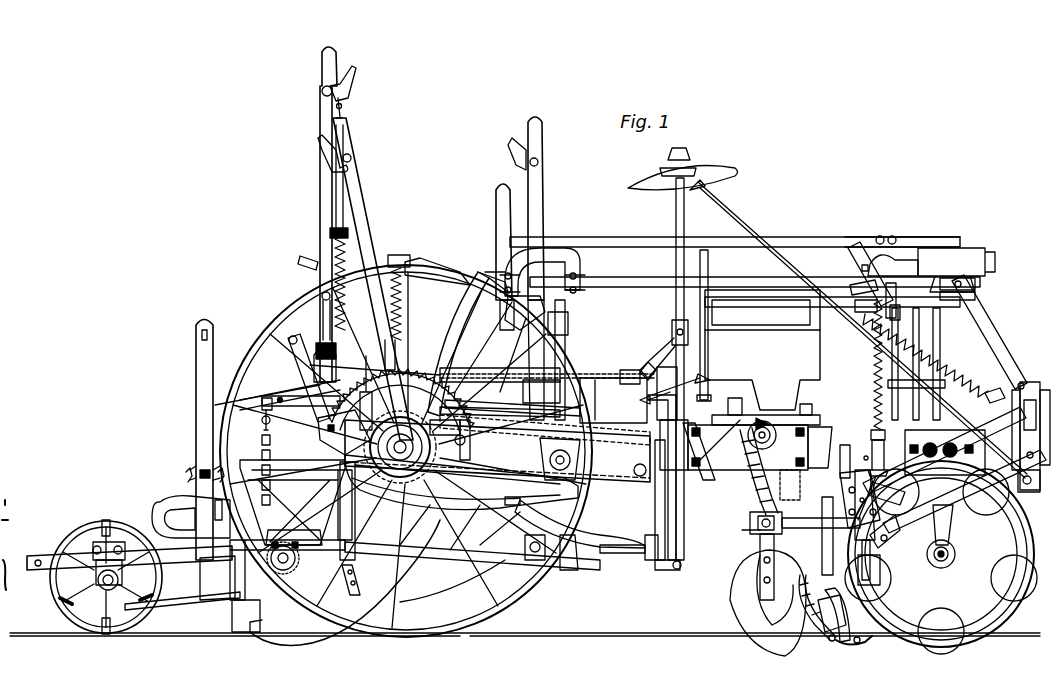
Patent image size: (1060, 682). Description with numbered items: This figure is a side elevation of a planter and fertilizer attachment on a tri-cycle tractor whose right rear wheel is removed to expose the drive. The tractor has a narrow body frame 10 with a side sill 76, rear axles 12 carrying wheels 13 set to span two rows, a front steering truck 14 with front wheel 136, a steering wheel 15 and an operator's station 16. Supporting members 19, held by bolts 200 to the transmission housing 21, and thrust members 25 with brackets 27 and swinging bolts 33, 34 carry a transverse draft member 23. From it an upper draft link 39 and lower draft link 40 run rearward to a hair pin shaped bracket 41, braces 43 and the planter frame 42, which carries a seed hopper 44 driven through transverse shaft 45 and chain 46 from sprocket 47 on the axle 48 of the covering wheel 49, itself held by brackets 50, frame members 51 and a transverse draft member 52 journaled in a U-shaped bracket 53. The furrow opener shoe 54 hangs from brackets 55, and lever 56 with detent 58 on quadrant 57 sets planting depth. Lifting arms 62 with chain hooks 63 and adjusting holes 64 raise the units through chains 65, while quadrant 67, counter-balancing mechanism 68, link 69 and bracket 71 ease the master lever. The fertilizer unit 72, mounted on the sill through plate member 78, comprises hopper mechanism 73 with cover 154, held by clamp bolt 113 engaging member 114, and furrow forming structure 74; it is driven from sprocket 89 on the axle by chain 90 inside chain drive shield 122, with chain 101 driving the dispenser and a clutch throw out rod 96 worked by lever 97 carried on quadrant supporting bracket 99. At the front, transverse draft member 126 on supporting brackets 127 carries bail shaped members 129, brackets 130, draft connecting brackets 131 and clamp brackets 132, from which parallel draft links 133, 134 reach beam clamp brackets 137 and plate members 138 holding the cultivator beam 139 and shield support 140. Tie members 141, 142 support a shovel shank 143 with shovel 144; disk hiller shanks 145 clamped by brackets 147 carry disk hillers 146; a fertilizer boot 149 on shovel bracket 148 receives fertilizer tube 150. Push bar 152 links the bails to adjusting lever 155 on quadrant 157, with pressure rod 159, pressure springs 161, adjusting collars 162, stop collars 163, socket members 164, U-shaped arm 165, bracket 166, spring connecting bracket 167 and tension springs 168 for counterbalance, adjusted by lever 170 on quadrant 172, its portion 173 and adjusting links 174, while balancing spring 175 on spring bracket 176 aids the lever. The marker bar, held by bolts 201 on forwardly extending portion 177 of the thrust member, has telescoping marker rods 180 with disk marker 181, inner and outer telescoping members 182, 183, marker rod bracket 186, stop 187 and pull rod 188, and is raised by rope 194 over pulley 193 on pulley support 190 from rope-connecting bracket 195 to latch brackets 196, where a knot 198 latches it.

The longitudinal body frame 10 is at (855, 426).
The axle 12 is at (412, 455).
The wheel 13 is at (412, 268).
The steering truck 14 is at (955, 552).
The steering wheel 15 is at (497, 204).
The operator's station 16 is at (300, 258).
The planter attachment supporting member 19 is at (580, 530).
The transmission housing 21 is at (548, 410).
The transverse draft member 23 is at (570, 570).
The thrust member 25 is at (395, 498).
The bracket 27 is at (520, 510).
The swinging bolt 33 is at (330, 442).
The swinging bolt 34 is at (331, 505).
The upper draft link 39 is at (462, 508).
The lower draft link 40 is at (432, 558).
The hair pin shaped bracket 41 is at (362, 548).
The planter frame 42 is at (315, 545).
The brace 43 is at (318, 530).
The seed hopper 44 is at (292, 502).
The transverse shaft 45 is at (290, 568).
The chain 46 is at (182, 604).
The sprocket 47 is at (118, 580).
The axle 48 is at (106, 577).
The covering wheel 49 is at (104, 520).
The bracket 50 is at (103, 556).
The covering wheel frame member 51 is at (140, 556).
The transverse draft member 52 is at (200, 562).
The U-shaped bracket 53 is at (232, 582).
The furrow opener shoe 54 is at (250, 636).
The downwardly extending bracket 55 is at (358, 577).
The lever 56 is at (196, 374).
The adjusting quadrant 57 is at (157, 512).
The adjustable detent 58 is at (196, 468).
The lifting arm 62 is at (296, 392).
The chain hook 63 is at (262, 402).
The adjusting hole 64 is at (274, 392).
The chain 65 is at (320, 180).
The adjusting quadrant 67 is at (288, 336).
The counter-balancing mechanism 68 is at (332, 240).
The link 69 is at (322, 340).
The bracket 71 is at (330, 230).
The fertilizer unit 72 is at (812, 425).
The fertilizer hopper mechanism 73 is at (764, 293).
The furrow forming structure 74 is at (762, 350).
The side sill 76 is at (812, 432).
The longitudinally extending plate member 78 is at (789, 485).
The sprocket 89 is at (445, 440).
The chain 90 is at (492, 480).
The clutch throw out rod 96 is at (585, 412).
The lever 97 is at (452, 418).
The quadrant supporting bracket 99 is at (280, 457).
The chain 101 is at (706, 478).
The clamp bolt 113 is at (778, 412).
The downwardly extending member 114 is at (756, 422).
The chain drive shield 122 is at (497, 451).
The transverse draft member 126 is at (964, 491).
The supporting bracket 127 is at (980, 402).
The bail shaped member 129 is at (975, 305).
The bracket 130 is at (1026, 378).
The draft connecting bracket 131 is at (1016, 385).
The clamp bracket 132 is at (1044, 388).
The parallel draft link 133 is at (975, 400).
The draft link 134 is at (892, 530).
The front wheel 136 is at (1018, 478).
The beam clamp bracket 137 is at (872, 560).
The plate member 138 is at (876, 500).
The cultivator beam 139 is at (778, 548).
The cultivator shield support 140 is at (955, 505).
The upper tie member 141 is at (842, 500).
The lower tie member 142 is at (870, 570).
The shovel shank 143 is at (824, 565).
The cultivator shovel 144 is at (858, 645).
The disk hiller shank 145 is at (762, 540).
The disk hiller 146 is at (740, 595).
The clamp bracket 147 is at (745, 528).
The cultivator shovel bracket 148 is at (838, 642).
The fertilizer boot 149 is at (815, 630).
The fertilizer tube 150 is at (760, 500).
The push bar 152 is at (476, 300).
The cover 154 is at (761, 318).
The adjusting lever 155 is at (369, 196).
The quadrant 157 is at (440, 372).
The pressure rod 159 is at (905, 260).
The pressure spring 161 is at (872, 380).
The adjusting collar 162 is at (859, 479).
The stop collar 163 is at (884, 237).
The socket member 164 is at (965, 280).
The U-shaped arm 165 is at (858, 250).
The bracket 166 is at (860, 272).
The U-shaped spring connecting bracket 167 is at (856, 316).
The tension spring 168 is at (968, 378).
The adjusting lever 170 is at (543, 148).
The adjusting quadrant 172 is at (560, 248).
The forwardly extending portion 173 is at (500, 344).
The adjusting link 174 is at (635, 276).
The balancing spring 175 is at (405, 280).
The spring bracket 176 is at (392, 256).
The forwardly extending portion 177 is at (625, 555).
The telescoping marker rod 180 is at (675, 300).
The disk marker 181 is at (710, 168).
The inner telescoping member 182 is at (685, 236).
The outer telescoping member 183 is at (672, 390).
The marker rod bracket 186 is at (668, 570).
The stop 187 is at (742, 520).
The adjustable pull rod 188 is at (945, 444).
The pulley support 190 is at (708, 376).
The pulley 193 is at (643, 393).
The rope 194 is at (600, 375).
The rope-connecting bracket 195 is at (665, 325).
The latch bracket 196 is at (462, 392).
The knot 198 is at (366, 362).
The bolt 200 is at (559, 459).
The bolt 201 is at (648, 535).